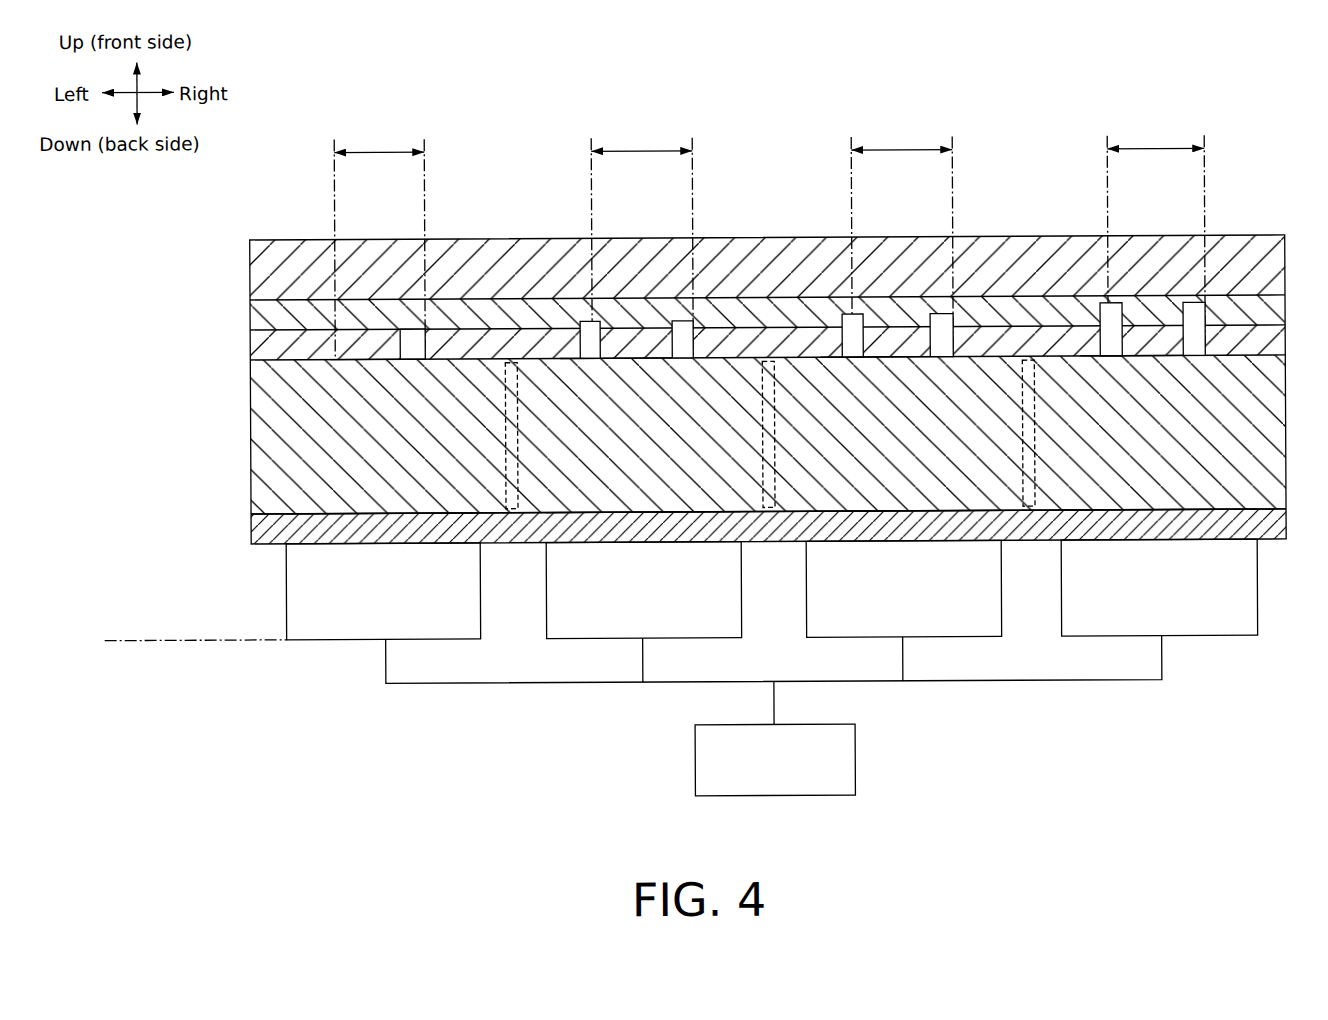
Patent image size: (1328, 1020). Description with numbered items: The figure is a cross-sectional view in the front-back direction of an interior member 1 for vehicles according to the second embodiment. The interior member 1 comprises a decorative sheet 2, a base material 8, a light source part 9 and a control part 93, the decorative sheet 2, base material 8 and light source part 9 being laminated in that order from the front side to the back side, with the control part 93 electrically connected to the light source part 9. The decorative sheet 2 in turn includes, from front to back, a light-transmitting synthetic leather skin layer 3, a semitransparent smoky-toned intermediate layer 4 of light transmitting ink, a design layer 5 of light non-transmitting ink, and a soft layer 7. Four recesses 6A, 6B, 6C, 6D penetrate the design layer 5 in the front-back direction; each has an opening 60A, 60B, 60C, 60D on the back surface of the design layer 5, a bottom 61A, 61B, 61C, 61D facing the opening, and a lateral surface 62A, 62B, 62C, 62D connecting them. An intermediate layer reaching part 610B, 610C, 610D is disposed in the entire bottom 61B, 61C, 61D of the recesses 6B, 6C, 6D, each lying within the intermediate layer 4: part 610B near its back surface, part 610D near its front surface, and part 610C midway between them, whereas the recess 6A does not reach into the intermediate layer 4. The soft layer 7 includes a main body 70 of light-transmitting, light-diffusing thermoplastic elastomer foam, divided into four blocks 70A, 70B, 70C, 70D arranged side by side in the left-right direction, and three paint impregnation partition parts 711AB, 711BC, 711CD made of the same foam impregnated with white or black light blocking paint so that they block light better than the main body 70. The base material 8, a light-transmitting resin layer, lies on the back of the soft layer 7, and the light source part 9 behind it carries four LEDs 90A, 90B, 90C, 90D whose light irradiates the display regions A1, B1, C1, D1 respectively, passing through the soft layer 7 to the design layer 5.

The interior member 1 is at (1192, 84).
The decorative sheet 2 is at (250, 514).
The skin layer 3 is at (250, 300).
The intermediate layer 4 is at (250, 330).
The design layer 5 is at (250, 360).
The soft layer 7 is at (186, 514).
The base material 8 is at (250, 544).
The light source part 9 is at (118, 544).
The display region A1 is at (395, 141).
The display region B1 is at (655, 141).
The display region C1 is at (915, 141).
The display region D1 is at (1170, 141).
The recess 6A is at (384, 315).
The recess 6B is at (660, 293).
The recess 6C is at (921, 287).
The recess 6D is at (1172, 281).
The opening 60A is at (388, 364).
The opening 60B is at (572, 364).
The opening 60C is at (835, 364).
The opening 60D is at (1090, 364).
The bottom 61A is at (402, 362).
The bottom 61B is at (675, 261).
The bottom 61C is at (937, 255).
The bottom 61D is at (1191, 249).
The intermediate layer reaching part 610B is at (684, 326).
The intermediate layer reaching part 610C is at (942, 320).
The intermediate layer reaching part 610D is at (1195, 310).
The lateral surface 62A is at (336, 352).
The lateral surface 62B is at (590, 350).
The lateral surface 62C is at (850, 350).
The lateral surface 62D is at (1105, 350).
The main body 70 is at (252, 428).
The block 70A is at (320, 515).
The block 70B is at (585, 515).
The block 70C is at (843, 515).
The block 70D is at (1100, 515).
The paint impregnation partition part 711AB is at (511, 360).
The paint impregnation partition part 711BC is at (768, 360).
The paint impregnation partition part 711CD is at (1028, 360).
The light source 90A is at (345, 641).
The light source 90B is at (600, 641).
The light source 90C is at (860, 641).
The light source 90D is at (1118, 641).
The control part 93 is at (854, 742).